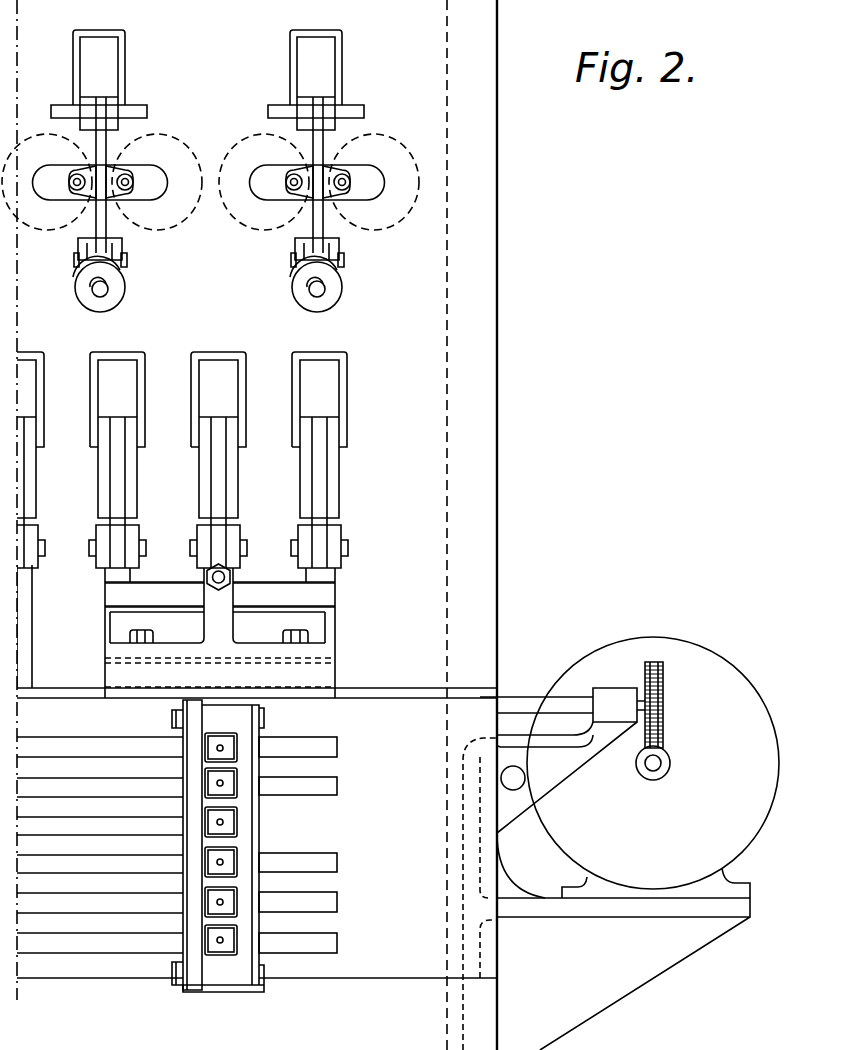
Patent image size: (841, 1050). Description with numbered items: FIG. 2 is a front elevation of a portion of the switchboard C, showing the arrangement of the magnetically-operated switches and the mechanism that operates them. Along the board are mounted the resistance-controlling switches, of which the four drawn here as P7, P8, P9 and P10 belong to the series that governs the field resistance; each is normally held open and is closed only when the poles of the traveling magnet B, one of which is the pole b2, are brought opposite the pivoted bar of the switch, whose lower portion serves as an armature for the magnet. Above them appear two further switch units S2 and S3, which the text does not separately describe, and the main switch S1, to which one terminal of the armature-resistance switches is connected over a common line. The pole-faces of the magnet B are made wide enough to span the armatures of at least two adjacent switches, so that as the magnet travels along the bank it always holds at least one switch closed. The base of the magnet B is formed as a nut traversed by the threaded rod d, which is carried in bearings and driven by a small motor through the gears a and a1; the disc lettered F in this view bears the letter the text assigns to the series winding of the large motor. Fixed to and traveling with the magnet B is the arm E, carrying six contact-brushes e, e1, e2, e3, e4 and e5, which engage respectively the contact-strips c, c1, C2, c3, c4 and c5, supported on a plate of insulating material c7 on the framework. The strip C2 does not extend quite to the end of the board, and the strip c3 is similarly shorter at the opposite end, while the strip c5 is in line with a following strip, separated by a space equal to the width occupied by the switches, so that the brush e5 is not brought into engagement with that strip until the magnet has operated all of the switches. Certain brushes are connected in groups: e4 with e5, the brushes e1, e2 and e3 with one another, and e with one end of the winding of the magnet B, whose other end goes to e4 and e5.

The main switch S1 is at (351, 243).
The plunger sleeve S2 is at (138, 78).
The plunger sleeve S3 is at (355, 78).
The switchboard C is at (466, 287).
The field-resistance switch P7 is at (52, 520).
The field-resistance switch P8 is at (124, 460).
The field-resistance switch P9 is at (225, 460).
The field-resistance switch P10 is at (329, 460).
The traveling magnet B is at (320, 623).
The pole of the magnet b2 is at (220, 595).
The contact-strip C2 is at (100, 857).
The arm E is at (240, 715).
The contact-brush e is at (237, 760).
The contact-brush e1 is at (237, 797).
The contact-brush e2 is at (237, 833).
The contact-brush e3 is at (237, 877).
The contact-brush e4 is at (237, 917).
The contact-brush e5 is at (237, 955).
The contact-strip c is at (330, 749).
The contact-strip c1 is at (337, 786).
The contact-strip c3 is at (330, 862).
The contact-strip c4 is at (337, 900).
The contact-strip c5 is at (310, 941).
The plate of insulating material c7 is at (376, 968).
The series winding F is at (638, 843).
The gear a is at (670, 763).
The gear a1 is at (666, 700).
The threaded rod d is at (562, 698).